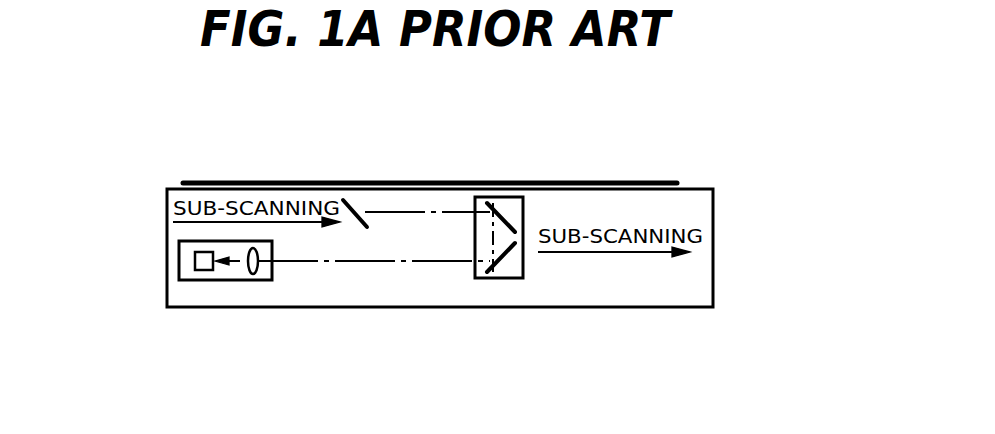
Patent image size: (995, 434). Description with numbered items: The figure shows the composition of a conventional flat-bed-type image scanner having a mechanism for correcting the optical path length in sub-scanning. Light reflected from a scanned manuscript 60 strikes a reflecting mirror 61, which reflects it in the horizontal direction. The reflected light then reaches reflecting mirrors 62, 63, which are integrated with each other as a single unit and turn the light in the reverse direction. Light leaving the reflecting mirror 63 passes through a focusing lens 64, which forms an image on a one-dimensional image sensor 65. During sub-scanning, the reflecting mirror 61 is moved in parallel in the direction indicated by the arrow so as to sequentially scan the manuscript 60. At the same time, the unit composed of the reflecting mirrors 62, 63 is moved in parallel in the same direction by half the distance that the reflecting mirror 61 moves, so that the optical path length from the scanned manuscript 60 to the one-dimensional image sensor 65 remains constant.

The scanned manuscript 60 is at (650, 183).
The reflecting mirror 61 is at (357, 213).
The reflecting mirror 62 is at (515, 235).
The reflecting mirror 63 is at (517, 240).
The focusing lens 64 is at (257, 273).
The one-dimensional image sensor 65 is at (203, 266).